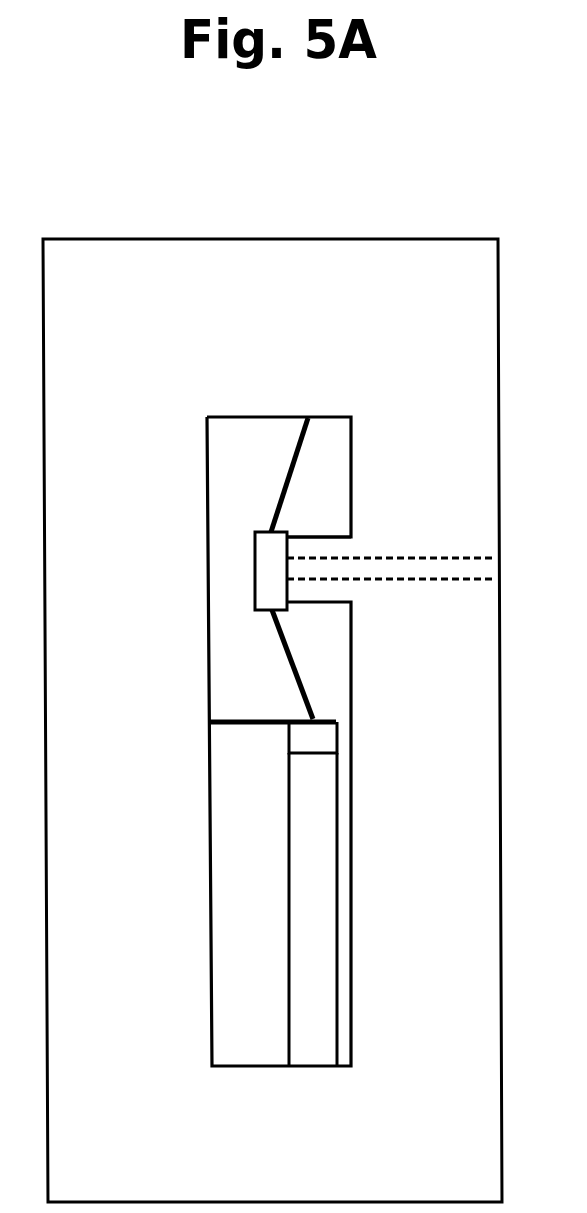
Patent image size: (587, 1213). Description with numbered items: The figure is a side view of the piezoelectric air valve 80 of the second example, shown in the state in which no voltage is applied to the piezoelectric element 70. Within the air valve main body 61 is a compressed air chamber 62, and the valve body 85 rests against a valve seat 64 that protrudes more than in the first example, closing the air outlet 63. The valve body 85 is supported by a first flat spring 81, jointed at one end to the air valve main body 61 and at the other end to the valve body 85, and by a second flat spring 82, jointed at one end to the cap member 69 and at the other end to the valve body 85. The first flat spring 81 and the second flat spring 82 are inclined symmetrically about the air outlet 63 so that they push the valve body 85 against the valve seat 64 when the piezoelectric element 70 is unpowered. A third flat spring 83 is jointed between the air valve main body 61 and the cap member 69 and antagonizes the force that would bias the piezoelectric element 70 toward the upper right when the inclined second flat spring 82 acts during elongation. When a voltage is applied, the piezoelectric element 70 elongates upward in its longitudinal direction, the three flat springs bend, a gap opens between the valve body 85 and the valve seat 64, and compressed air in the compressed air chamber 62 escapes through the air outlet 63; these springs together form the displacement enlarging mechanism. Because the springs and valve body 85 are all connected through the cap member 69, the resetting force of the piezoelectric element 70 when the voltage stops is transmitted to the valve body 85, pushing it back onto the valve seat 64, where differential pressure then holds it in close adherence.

The air valve main body 61 is at (105, 268).
The piezoelectric air valve 80 is at (357, 195).
The compressed air chamber 62 is at (232, 438).
The first flat spring 81 is at (310, 437).
The second flat spring 82 is at (295, 672).
The valve body 85 is at (262, 567).
The valve seat 64 is at (341, 513).
The air outlet 63 is at (472, 565).
The third flat spring 83 is at (238, 727).
The cap member 69 is at (318, 738).
The piezoelectric element 70 is at (313, 883).